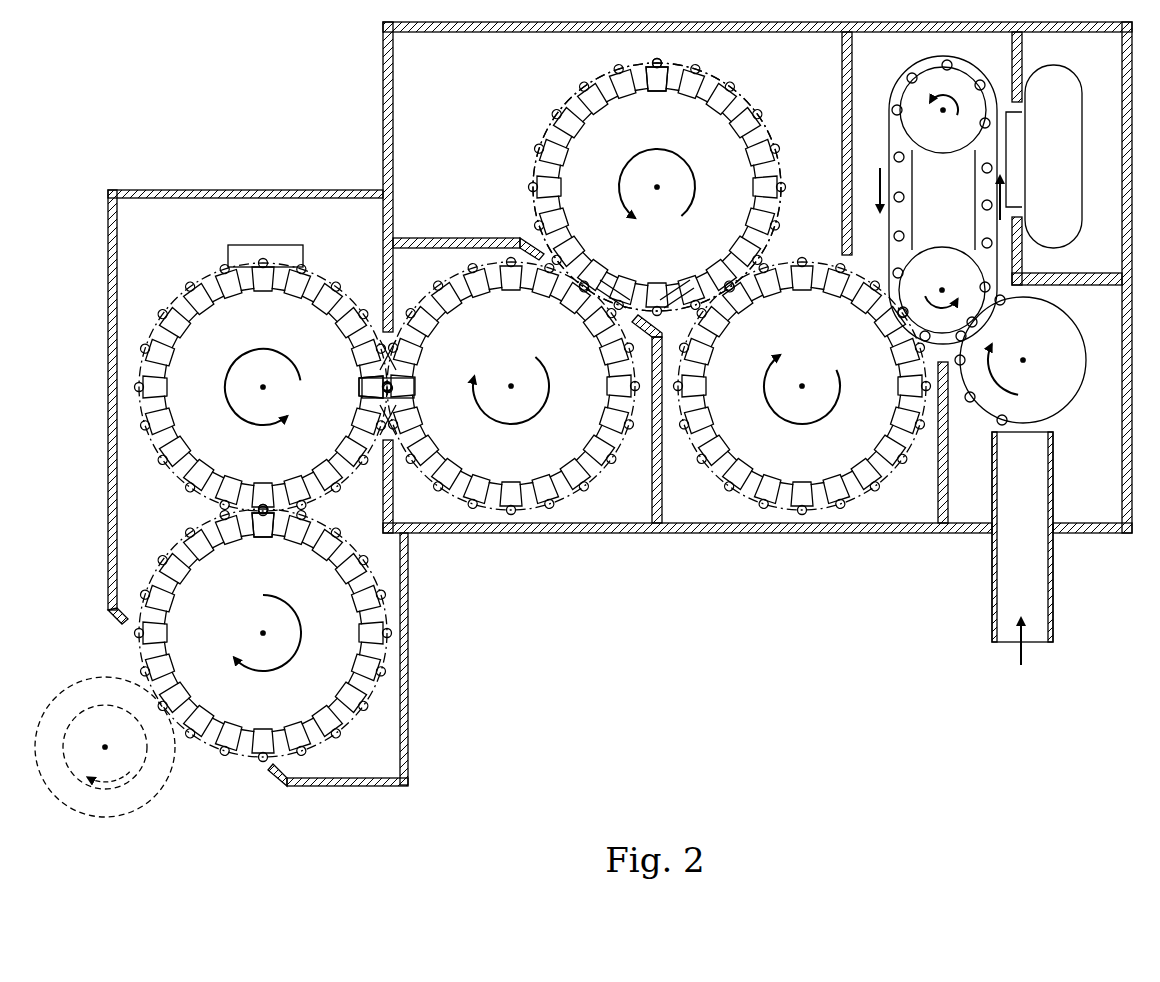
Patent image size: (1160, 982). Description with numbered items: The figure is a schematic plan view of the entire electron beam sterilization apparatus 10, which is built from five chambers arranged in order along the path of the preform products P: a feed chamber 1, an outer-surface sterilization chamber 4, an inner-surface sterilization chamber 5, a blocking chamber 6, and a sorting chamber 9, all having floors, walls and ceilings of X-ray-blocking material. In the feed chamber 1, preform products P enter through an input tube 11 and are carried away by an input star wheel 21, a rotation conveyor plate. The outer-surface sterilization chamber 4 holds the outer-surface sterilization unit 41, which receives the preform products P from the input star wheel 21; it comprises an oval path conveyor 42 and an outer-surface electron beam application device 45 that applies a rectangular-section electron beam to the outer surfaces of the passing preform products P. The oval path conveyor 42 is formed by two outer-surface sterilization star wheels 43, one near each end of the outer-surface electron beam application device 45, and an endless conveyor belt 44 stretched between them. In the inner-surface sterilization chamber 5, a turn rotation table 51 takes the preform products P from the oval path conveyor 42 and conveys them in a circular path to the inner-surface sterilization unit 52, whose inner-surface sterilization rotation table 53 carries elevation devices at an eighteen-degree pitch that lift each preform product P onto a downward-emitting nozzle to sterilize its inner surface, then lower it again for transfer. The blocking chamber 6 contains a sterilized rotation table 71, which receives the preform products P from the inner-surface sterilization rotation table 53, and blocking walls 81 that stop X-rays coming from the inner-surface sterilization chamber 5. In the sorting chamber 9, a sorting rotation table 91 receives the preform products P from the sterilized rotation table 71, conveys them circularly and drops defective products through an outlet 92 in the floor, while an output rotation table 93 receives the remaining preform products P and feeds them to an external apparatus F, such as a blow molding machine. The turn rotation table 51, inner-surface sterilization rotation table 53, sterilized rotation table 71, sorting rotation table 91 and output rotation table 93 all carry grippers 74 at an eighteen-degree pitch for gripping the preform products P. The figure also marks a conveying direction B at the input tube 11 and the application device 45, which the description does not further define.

The feed chamber 1 is at (1084, 518).
The outer-surface sterilization chamber 4 is at (989, 61).
The inner-surface sterilization chamber 5 is at (416, 58).
The blocking chamber 6 is at (416, 273).
The sorting chamber 9 is at (139, 224).
The electron beam sterilization apparatus 10 is at (656, 668).
The input tube 11 is at (1037, 577).
The input star wheel 21 is at (1078, 348).
The outer-surface sterilization unit 41 is at (882, 92).
The oval path conveyor 42 is at (943, 165).
The outer-surface sterilization star wheels 43 is at (903, 160).
The endless conveyor belt 44 is at (908, 206).
The outer-surface electron beam application device 45 is at (1080, 96).
The turn rotation table 51 is at (738, 445).
The inner-surface sterilization unit 52 is at (778, 110).
The inner-surface sterilization rotation table 53 is at (722, 132).
The sterilized rotation table 71 is at (575, 455).
The grippers 74 is at (358, 385).
The blocking walls 81 is at (400, 455).
The sorting rotation table 91 is at (182, 302).
The outlet 92 is at (305, 248).
The output rotation table 93 is at (327, 690).
The preform products P is at (268, 478).
The bottle B is at (1043, 555).
The external apparatus F is at (160, 775).